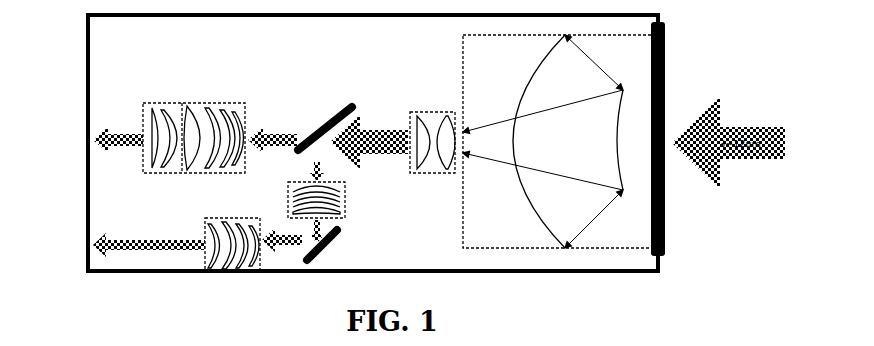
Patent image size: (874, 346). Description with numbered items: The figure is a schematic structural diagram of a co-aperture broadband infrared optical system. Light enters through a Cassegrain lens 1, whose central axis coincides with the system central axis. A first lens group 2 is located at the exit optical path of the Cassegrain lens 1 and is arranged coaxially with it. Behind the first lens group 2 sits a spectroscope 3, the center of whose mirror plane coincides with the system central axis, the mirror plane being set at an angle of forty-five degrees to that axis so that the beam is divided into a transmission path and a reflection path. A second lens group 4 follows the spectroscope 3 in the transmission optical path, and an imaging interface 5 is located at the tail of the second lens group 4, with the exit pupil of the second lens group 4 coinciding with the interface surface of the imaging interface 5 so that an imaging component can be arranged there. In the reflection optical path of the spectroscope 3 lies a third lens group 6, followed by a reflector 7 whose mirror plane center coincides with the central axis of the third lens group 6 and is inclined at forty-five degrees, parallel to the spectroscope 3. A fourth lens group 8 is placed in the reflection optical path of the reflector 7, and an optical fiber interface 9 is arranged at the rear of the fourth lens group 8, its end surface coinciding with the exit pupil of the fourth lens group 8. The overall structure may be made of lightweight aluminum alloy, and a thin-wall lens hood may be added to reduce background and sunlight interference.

The Cassegrain lens 1 is at (557, 141).
The first lens group 2 is at (432, 123).
The spectroscope 3 is at (353, 129).
The second lens group 4 is at (220, 125).
The imaging interface 5 is at (89, 127).
The third lens group 6 is at (348, 190).
The reflector 7 is at (344, 240).
The fourth lens group 8 is at (252, 224).
The optical fiber interface 9 is at (113, 228).